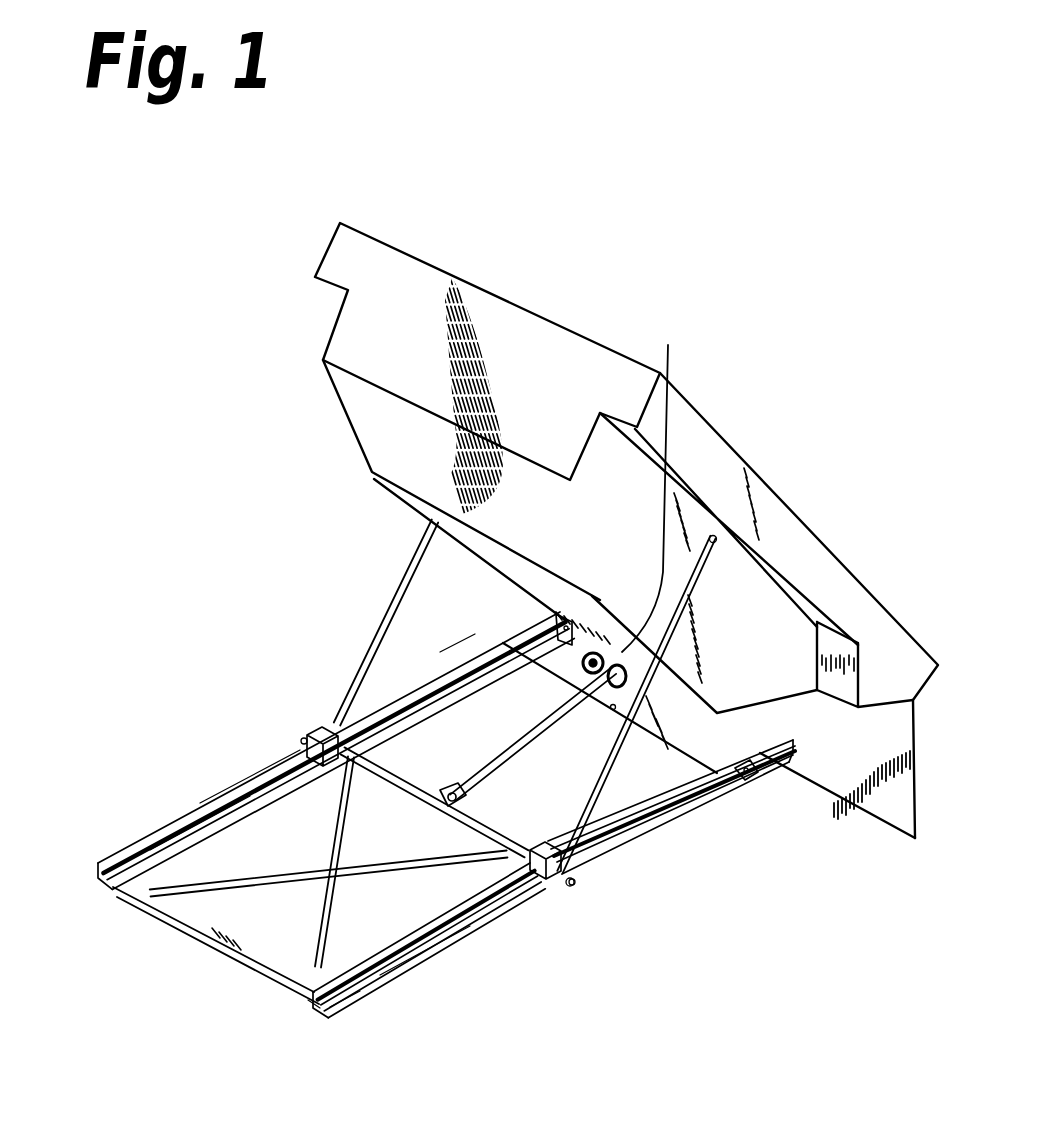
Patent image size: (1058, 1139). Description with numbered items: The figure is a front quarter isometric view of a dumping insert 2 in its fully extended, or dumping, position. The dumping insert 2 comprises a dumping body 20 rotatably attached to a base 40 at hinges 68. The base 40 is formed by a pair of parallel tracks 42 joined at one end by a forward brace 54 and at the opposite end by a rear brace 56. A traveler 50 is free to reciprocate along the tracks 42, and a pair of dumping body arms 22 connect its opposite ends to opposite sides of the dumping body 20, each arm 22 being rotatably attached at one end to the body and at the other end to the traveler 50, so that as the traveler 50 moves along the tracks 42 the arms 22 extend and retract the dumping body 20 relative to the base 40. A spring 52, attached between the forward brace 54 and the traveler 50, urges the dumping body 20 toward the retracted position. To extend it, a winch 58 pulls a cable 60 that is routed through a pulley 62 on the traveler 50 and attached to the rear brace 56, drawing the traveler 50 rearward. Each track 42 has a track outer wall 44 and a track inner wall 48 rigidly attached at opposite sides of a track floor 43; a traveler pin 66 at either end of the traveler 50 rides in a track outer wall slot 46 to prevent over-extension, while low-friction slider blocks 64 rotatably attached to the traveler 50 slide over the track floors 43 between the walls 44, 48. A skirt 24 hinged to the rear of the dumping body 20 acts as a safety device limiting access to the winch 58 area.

The dumping insert 2 is at (842, 223).
The dumping body 20 is at (517, 318).
The dumping body arm 22 is at (388, 612).
The skirt 24 is at (890, 810).
The base 40 is at (520, 910).
The track 42 is at (103, 887).
The track floor 43 is at (178, 840).
The track outer wall 44 is at (480, 652).
The track outer wall slot 46 is at (232, 790).
The track inner wall 48 is at (213, 823).
The traveler 50 is at (490, 827).
The spring 52 is at (350, 835).
The forward brace 54 is at (177, 915).
The rear brace 56 is at (753, 680).
The winch 58 is at (668, 345).
The cable 60 is at (495, 753).
The pulley 62 is at (443, 790).
The slider block 64 is at (318, 732).
The traveler pin 66 is at (305, 740).
The hinge 68 is at (553, 623).